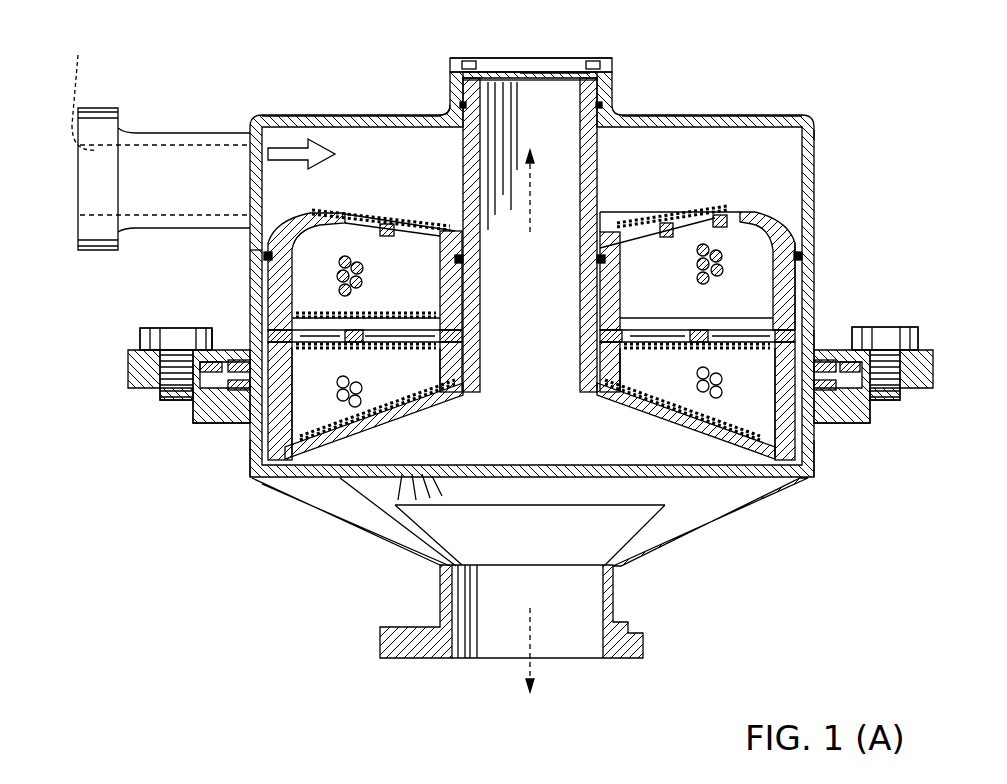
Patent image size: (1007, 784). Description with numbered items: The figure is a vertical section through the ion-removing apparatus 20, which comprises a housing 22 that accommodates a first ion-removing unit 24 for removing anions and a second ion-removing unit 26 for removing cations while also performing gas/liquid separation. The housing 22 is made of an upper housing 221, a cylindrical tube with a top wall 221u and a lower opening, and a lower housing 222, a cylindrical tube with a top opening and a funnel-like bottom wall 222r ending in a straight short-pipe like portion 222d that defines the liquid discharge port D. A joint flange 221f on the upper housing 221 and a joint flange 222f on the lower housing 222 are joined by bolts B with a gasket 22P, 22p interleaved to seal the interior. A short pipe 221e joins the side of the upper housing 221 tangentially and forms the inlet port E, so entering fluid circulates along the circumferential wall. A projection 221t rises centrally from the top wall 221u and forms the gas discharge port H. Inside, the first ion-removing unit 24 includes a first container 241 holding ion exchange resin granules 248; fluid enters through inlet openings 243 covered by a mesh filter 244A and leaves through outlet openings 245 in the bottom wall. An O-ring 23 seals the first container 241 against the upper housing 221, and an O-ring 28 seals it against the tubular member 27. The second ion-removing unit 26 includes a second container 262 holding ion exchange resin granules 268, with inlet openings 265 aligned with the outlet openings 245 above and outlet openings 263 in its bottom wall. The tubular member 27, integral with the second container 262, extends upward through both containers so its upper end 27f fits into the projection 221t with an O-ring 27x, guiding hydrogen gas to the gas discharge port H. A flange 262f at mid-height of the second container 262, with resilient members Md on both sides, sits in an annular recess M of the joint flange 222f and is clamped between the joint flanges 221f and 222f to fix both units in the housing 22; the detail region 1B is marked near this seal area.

The ion-removing apparatus 20 is at (818, 60).
The housing 22 is at (824, 117).
The upper housing 221 is at (396, 112).
The short pipe 221e is at (145, 160).
The projection 221t is at (614, 58).
The top wall 221u is at (756, 116).
The joint flange 221f is at (818, 330).
The gasket 22P is at (140, 385).
The gasket 22p is at (866, 405).
The lower housing 222 is at (354, 504).
The bottom wall 222r is at (640, 545).
The straight short-pipe like portion 222d is at (620, 598).
The joint flange 222f is at (845, 423).
The O-ring 23 is at (272, 262).
The first ion-removing unit 24 is at (782, 208).
The first container 241 is at (816, 258).
The inlet openings 243 is at (270, 246).
The mesh filter 244A is at (365, 210).
The outlet openings 245 is at (320, 312).
The ion exchange resin granules 248 is at (365, 270).
The second ion-removing unit 26 is at (626, 420).
The second container 262 is at (816, 295).
The flange 262f is at (212, 400).
The outlet openings 263 is at (335, 445).
The inlet openings 265 is at (324, 352).
The ion exchange resin granules 268 is at (440, 416).
The tubular member 27 is at (600, 125).
The upper end 27f is at (600, 78).
The O-ring 27x is at (455, 105).
The O-ring 28 is at (456, 250).
The inlet port E is at (80, 91).
The gas discharge port H is at (553, 70).
The bolts B is at (142, 338).
The resilient members Md is at (212, 332).
The annular recess M is at (248, 472).
The liquid discharge port D is at (570, 648).
The section line 1B is at (246, 254).